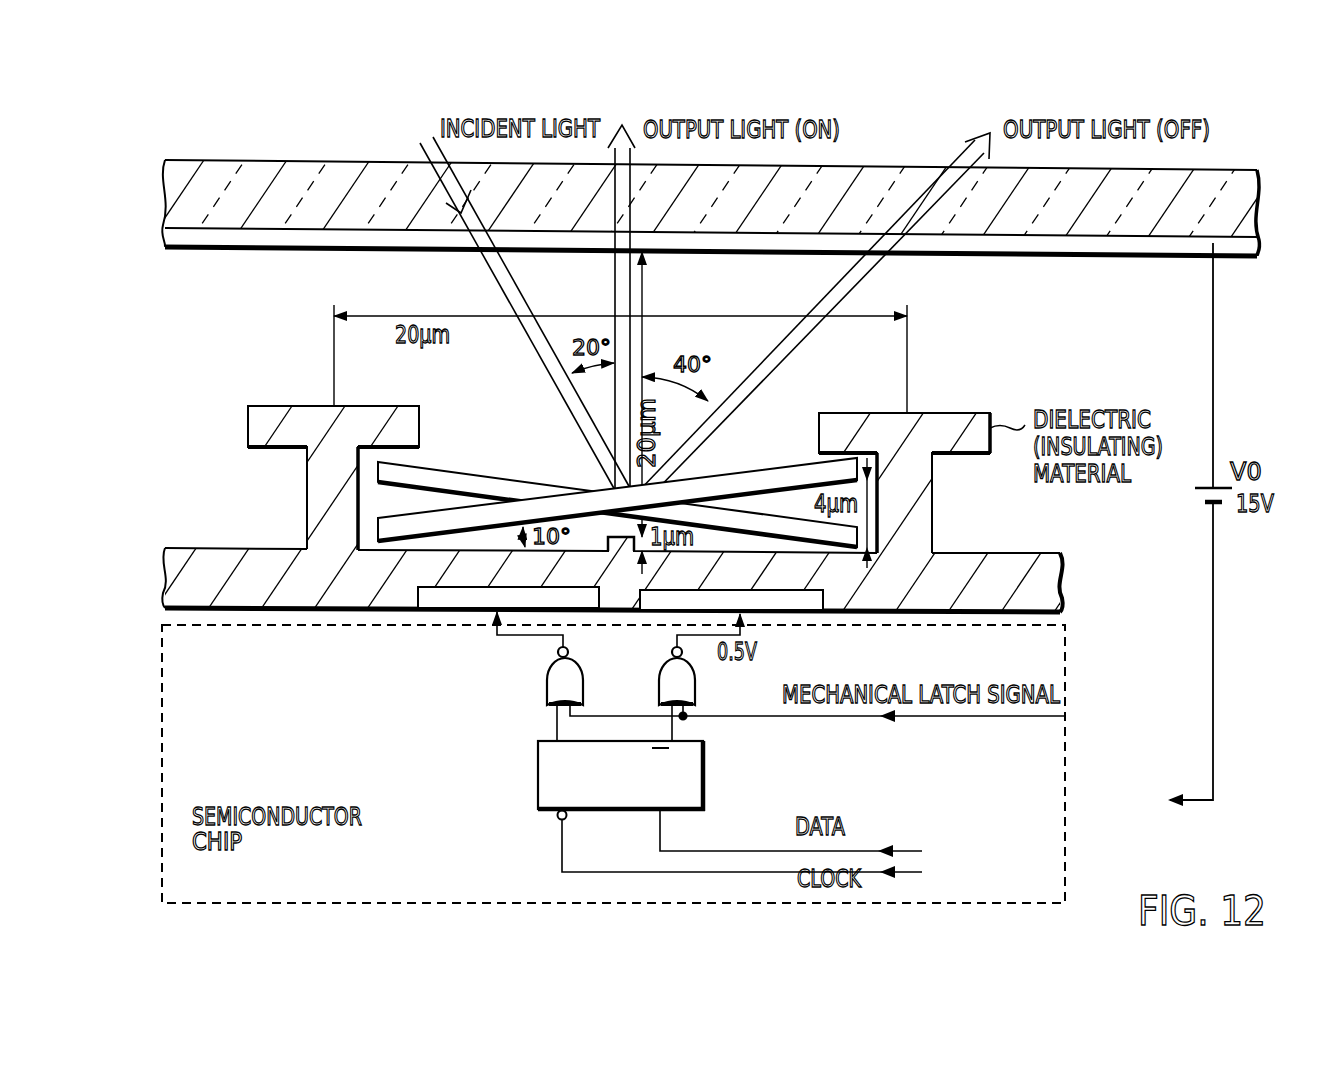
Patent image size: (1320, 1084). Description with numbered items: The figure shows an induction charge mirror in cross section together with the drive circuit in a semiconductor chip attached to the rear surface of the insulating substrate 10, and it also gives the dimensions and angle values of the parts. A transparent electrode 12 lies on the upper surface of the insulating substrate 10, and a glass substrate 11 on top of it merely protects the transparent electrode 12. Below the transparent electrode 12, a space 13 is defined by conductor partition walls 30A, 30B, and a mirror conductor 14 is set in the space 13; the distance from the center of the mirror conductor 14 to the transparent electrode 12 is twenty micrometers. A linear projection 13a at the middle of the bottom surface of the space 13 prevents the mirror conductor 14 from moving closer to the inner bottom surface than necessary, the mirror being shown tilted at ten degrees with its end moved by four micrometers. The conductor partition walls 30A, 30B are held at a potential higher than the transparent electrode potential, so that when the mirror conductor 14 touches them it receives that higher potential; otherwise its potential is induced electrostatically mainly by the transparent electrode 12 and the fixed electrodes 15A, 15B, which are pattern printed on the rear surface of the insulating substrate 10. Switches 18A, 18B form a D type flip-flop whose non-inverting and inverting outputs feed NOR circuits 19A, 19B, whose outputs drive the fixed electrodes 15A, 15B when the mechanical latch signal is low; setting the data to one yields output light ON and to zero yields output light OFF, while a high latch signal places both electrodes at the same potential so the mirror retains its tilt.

The insulating substrate 10 is at (1063, 580).
The glass substrate 11 is at (1230, 170).
The transparent electrode 12 is at (1045, 258).
The space 13 is at (370, 536).
The linear projection 13a is at (603, 540).
The mirror conductor 14 is at (688, 470).
The fixed electrode 15A is at (443, 602).
The fixed electrode 15B is at (802, 600).
The switch 18A is at (538, 774).
The switch 18B is at (705, 776).
The NOR circuit 19A is at (545, 681).
The NOR circuit 19B is at (700, 691).
The conductor partition wall 30A is at (304, 486).
The conductor partition wall 30B is at (932, 503).